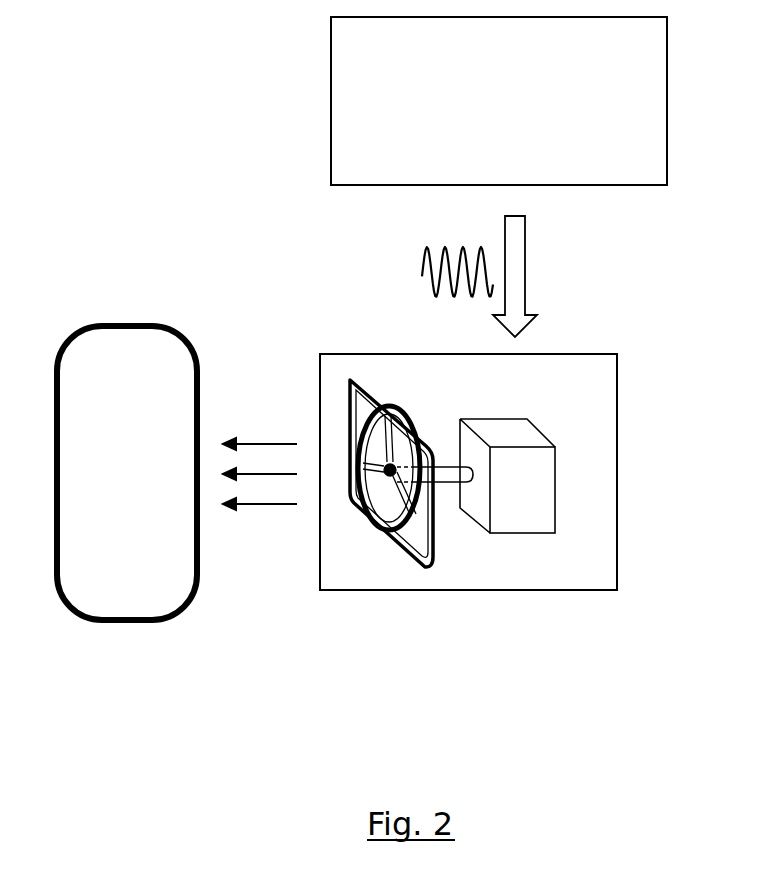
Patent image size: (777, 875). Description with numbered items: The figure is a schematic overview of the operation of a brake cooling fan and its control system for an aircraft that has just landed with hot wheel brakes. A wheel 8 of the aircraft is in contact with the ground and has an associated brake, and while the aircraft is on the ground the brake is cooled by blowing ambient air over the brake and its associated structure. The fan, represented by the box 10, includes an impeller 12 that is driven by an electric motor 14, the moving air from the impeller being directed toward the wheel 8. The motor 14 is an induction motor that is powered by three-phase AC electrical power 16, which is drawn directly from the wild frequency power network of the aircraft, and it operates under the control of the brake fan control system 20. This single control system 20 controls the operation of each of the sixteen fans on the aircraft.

The wheel 8 is at (120, 580).
The fan 10 is at (618, 527).
The impeller 12 is at (415, 540).
The electric motor 14 is at (527, 503).
The three-phase AC electrical power 16 is at (415, 265).
The brake fan control system 20 is at (513, 118).